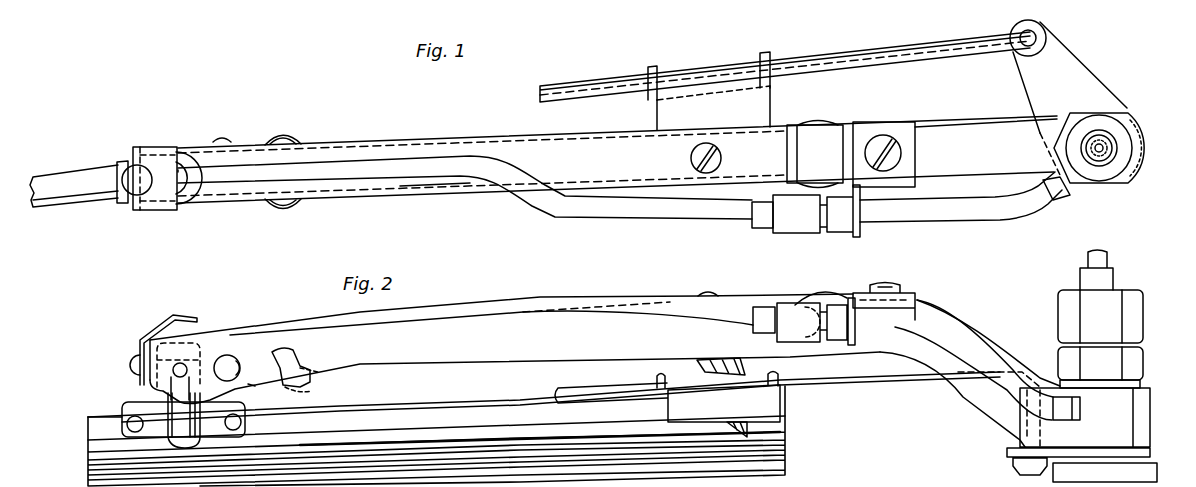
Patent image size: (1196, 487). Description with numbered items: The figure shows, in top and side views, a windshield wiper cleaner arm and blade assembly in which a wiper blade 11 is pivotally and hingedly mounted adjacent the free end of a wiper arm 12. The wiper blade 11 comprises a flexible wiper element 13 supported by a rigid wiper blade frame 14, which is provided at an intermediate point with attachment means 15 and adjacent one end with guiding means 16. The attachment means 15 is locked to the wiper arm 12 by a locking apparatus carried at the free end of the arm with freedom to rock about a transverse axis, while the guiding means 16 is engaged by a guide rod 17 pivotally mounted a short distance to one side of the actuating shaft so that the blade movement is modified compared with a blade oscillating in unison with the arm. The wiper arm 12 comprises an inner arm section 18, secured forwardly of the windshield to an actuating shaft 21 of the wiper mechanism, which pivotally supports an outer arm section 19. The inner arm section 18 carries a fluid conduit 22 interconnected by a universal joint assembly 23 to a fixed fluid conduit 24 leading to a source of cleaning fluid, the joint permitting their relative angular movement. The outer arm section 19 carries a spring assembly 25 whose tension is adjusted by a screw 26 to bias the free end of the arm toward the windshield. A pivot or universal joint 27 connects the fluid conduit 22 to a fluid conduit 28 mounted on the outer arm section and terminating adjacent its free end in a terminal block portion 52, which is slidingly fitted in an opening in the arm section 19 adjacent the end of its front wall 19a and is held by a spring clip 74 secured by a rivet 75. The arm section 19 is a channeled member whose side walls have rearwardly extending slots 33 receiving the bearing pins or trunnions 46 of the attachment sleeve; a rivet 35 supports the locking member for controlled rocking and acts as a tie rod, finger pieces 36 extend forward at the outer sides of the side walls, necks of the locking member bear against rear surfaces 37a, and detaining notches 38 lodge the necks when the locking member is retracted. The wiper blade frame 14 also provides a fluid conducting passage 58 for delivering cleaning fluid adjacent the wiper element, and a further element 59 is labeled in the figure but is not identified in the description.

In FIG. 1, the wiper blade 11 is at (62, 172).
In FIG. 2, the wiper blade 11 is at (101, 408).
In FIG. 1, the wiper arm 12 is at (910, 110).
In FIG. 2, the wiper arm 12 is at (940, 296).
In FIG. 2, the flexible wiper element 13 is at (786, 462).
In FIG. 1, the wiper blade frame 14 is at (508, 130).
In FIG. 2, the wiper blade frame 14 is at (503, 402).
In FIG. 1, the attachment means 15 is at (120, 170).
In FIG. 2, the attachment means 15 is at (135, 410).
In FIG. 1, the guiding means 16 is at (771, 103).
In FIG. 2, the guiding means 16 is at (783, 407).
In FIG. 1, the guide rod 17 is at (918, 44).
In FIG. 2, the guide rod 17 is at (881, 393).
In FIG. 1, the inner arm section 18 is at (988, 128).
In FIG. 2, the inner arm section 18 is at (1003, 352).
In FIG. 1, the outer arm section 19 is at (427, 138).
In FIG. 2, the outer arm section 19 is at (467, 362).
In FIG. 1, the front wall 19a is at (412, 188).
In FIG. 2, the actuating shaft 21 is at (1150, 452).
In FIG. 1, the fluid conduit 22 is at (965, 214).
In FIG. 2, the fluid conduit 22 is at (962, 333).
In FIG. 1, the universal joint assembly 23 is at (1148, 135).
In FIG. 2, the universal joint assembly 23 is at (1148, 315).
In FIG. 1, the fluid conduit 24 is at (1100, 140).
In FIG. 2, the fluid conduit 24 is at (1108, 258).
In FIG. 2, the spring assembly 25 is at (727, 360).
In FIG. 1, the screw 26 is at (691, 158).
In FIG. 2, the screw 26 is at (702, 292).
In FIG. 1, the pivot or universal joint 27 is at (795, 227).
In FIG. 2, the pivot or universal joint 27 is at (790, 305).
In FIG. 1, the fluid conduit 28 is at (500, 172).
In FIG. 2, the fluid conduit 28 is at (550, 298).
In FIG. 2, the slots 33 is at (260, 376).
In FIG. 1, the rivet 35 is at (224, 141).
In FIG. 2, the rivet 35 is at (236, 360).
In FIG. 1, the finger pieces 36 is at (290, 132).
In FIG. 2, the finger pieces 36 is at (290, 357).
In FIG. 2, the rear surfaces 37a is at (300, 388).
In FIG. 2, the detaining notches 38 is at (307, 373).
In FIG. 2, the bearing pins or trunnions 46 is at (198, 370).
In FIG. 1, the terminal block portion 52 is at (199, 192).
In FIG. 2, the terminal block portion 52 is at (209, 323).
In FIG. 2, the fluid conducting passage 58 is at (335, 437).
In FIG. 2, the rail groove 59 is at (582, 441).
In FIG. 1, the spring clip 74 is at (153, 160).
In FIG. 2, the spring clip 74 is at (158, 334).
In FIG. 2, the rivet 75 is at (129, 356).